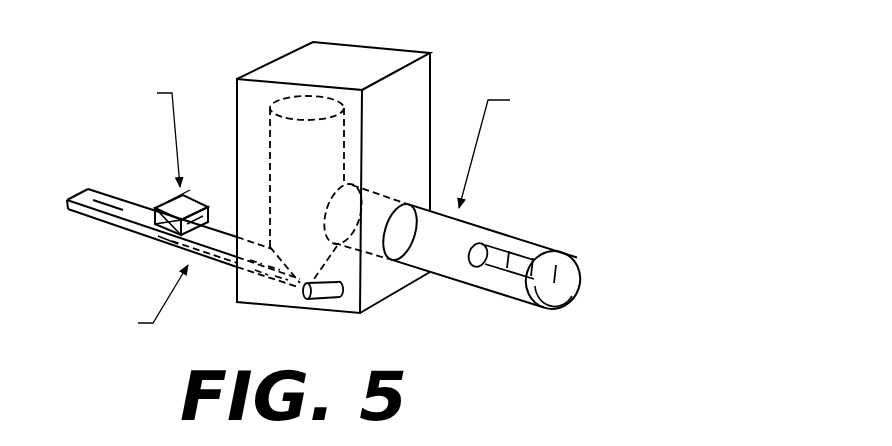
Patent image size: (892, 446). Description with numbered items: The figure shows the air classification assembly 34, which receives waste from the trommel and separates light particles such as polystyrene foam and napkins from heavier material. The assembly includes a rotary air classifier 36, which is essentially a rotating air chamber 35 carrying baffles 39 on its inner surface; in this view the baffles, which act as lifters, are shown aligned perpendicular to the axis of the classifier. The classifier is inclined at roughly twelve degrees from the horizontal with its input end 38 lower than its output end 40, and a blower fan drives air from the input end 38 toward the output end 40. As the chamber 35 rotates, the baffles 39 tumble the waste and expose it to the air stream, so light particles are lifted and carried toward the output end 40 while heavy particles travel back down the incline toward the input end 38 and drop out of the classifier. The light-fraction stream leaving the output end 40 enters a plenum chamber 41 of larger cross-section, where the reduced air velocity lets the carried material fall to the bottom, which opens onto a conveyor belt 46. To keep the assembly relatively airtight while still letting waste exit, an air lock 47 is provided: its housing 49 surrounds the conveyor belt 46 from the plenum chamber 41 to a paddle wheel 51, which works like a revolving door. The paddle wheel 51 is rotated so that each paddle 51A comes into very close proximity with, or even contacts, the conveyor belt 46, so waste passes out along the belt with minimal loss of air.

The air classification assembly 34 is at (184, 36).
The rotating air chamber 35 is at (561, 214).
The rotary air classifier 36 is at (538, 260).
The input end 38 is at (580, 273).
The baffles 39 is at (541, 251).
The output end 40 is at (358, 185).
The plenum chamber 41 is at (317, 107).
The conveyor belt 46 is at (122, 238).
The air lock 47 is at (146, 188).
The housing 49 is at (218, 222).
The paddle wheel 51 is at (152, 207).
The paddle 51A is at (163, 242).